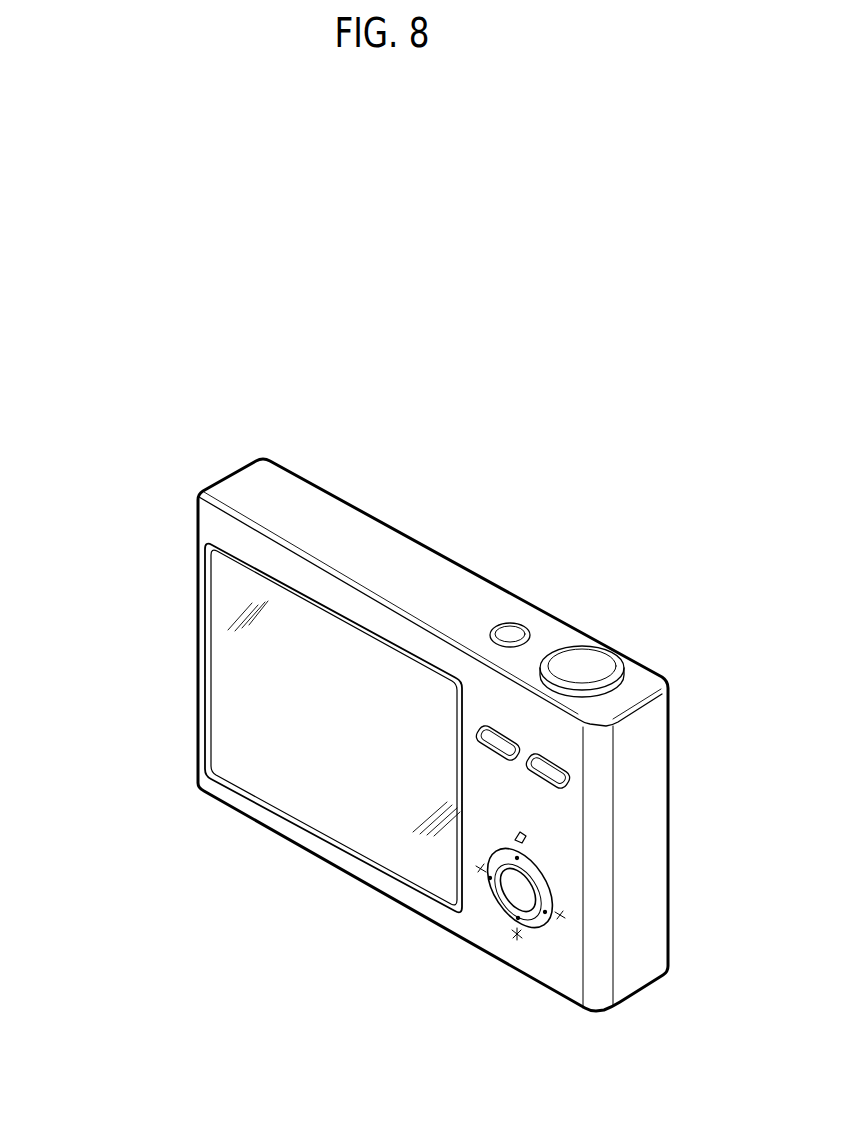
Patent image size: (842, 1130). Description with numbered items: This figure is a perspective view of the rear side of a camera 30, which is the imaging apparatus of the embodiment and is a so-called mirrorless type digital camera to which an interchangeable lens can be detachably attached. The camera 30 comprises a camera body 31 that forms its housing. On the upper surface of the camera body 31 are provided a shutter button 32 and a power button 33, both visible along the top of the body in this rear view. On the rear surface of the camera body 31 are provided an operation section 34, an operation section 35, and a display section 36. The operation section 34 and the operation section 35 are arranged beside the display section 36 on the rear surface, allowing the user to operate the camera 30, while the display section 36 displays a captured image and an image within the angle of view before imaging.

The camera 30 is at (134, 628).
The camera body 31 is at (655, 868).
The shutter button 32 is at (590, 662).
The power button 33 is at (512, 632).
The operation section 34 is at (568, 792).
The operation section 35 is at (533, 920).
The display section 36 is at (313, 810).